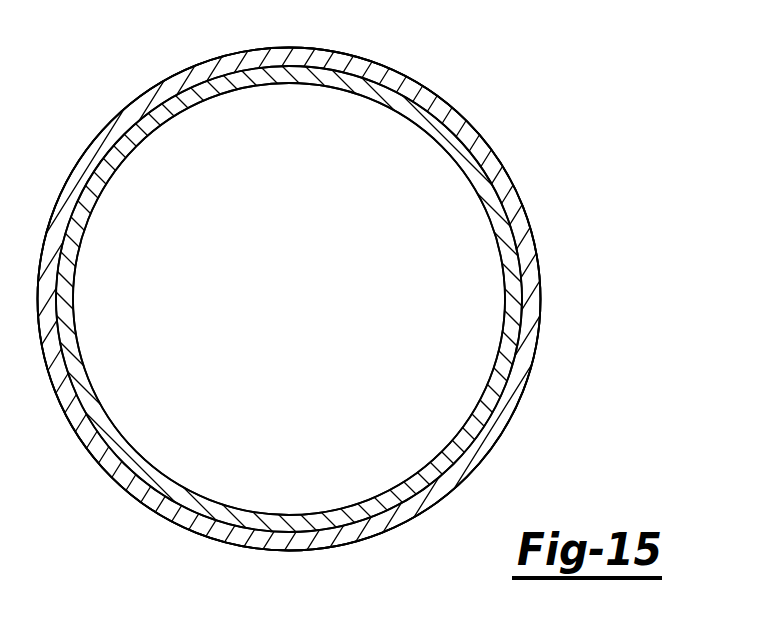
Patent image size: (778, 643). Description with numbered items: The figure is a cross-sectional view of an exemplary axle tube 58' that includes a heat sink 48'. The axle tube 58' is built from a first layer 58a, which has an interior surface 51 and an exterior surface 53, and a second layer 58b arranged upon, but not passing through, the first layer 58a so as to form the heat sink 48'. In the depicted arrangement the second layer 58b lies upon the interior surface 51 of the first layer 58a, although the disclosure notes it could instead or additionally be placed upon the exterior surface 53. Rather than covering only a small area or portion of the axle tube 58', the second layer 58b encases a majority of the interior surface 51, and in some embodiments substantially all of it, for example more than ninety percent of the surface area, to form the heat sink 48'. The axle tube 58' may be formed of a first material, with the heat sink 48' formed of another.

The axle tube 58' is at (341, 299).
The first layer 58a is at (132, 117).
The second layer 58b is at (288, 75).
The heat sink 48' is at (289, 299).
The exterior surface 53 is at (440, 78).
The interior surface 51 is at (475, 183).